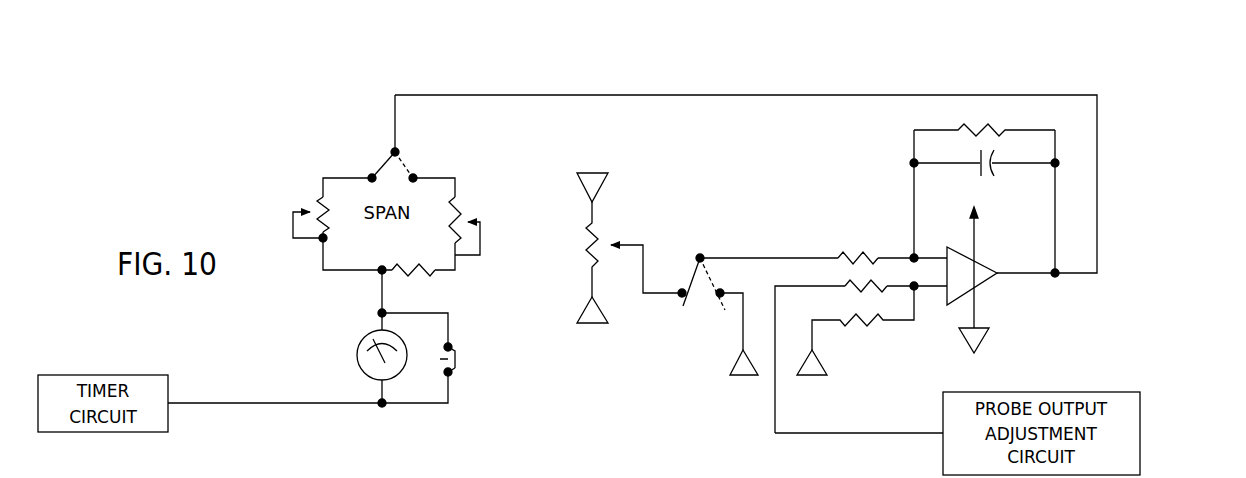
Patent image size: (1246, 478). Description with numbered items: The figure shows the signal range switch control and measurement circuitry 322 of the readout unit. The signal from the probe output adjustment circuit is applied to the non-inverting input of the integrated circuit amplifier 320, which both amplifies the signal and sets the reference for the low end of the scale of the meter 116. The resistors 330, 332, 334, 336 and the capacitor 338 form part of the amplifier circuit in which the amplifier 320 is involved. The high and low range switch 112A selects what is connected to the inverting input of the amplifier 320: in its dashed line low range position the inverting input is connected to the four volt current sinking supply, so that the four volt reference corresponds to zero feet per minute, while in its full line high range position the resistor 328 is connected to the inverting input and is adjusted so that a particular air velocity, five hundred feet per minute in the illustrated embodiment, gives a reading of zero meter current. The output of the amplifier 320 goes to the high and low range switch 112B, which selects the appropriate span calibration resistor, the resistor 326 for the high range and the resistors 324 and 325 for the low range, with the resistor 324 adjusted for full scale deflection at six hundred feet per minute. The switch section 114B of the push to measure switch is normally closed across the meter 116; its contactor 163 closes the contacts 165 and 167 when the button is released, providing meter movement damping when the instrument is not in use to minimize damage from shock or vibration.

The high and low range switch 112A is at (732, 244).
The high and low range switch 112B is at (417, 159).
The switch section 114B is at (485, 337).
The meter 116 is at (334, 351).
The contactor 163 is at (458, 352).
The contact 165 is at (448, 341).
The contact 167 is at (452, 376).
The integrated circuit amplifier 320 is at (1002, 307).
The signal range switch control and measurement circuitry 322 is at (1065, 166).
The range resistor 324 is at (456, 205).
The resistor 325 is at (432, 270).
The range resistor 326 is at (323, 198).
The resistor 328 is at (596, 226).
The resistor 330 is at (853, 252).
The resistor 332 is at (846, 282).
The resistor 334 is at (868, 326).
The resistor 336 is at (996, 129).
The capacitor 338 is at (1018, 176).